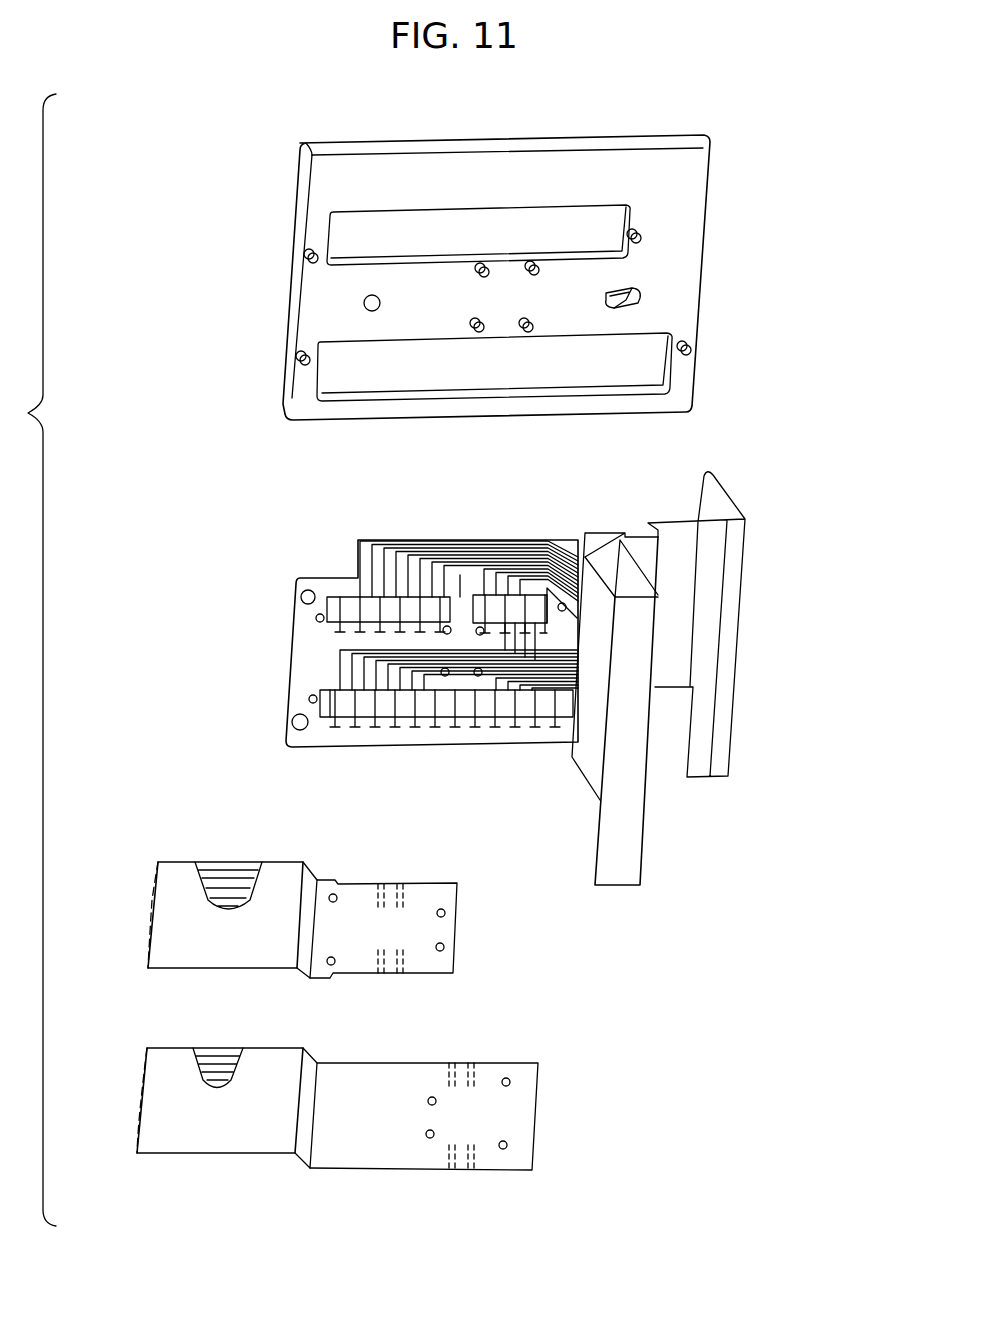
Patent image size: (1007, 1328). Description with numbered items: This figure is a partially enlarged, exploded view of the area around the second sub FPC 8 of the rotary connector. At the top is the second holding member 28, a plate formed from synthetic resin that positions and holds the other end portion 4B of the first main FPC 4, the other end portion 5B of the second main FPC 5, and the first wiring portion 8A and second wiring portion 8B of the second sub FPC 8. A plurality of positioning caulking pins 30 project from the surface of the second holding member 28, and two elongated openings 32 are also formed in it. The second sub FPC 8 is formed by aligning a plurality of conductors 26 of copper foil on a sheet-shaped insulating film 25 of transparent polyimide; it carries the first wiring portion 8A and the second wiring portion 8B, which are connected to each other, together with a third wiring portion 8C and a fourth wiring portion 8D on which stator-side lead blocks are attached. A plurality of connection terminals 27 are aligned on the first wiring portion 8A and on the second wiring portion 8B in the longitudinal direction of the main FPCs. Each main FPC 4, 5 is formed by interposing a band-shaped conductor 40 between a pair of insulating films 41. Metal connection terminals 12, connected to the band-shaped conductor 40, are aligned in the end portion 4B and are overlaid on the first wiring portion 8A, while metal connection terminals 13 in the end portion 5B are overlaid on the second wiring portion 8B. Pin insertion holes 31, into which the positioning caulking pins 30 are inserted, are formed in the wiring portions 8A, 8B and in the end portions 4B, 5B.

The second holding member 28 is at (700, 170).
The positioning caulking pin 30 is at (537, 262).
The slot 32 is at (479, 212).
The second sub flexible printed circuit board 8 is at (338, 558).
The insulating film 25 is at (310, 640).
The conductors 26 is at (335, 675).
The connection terminals 27 is at (385, 605).
The pin insertion hole 31 is at (447, 625).
The first wiring portion 8A is at (536, 729).
The second wiring portion 8B is at (367, 731).
The third wiring portion 8C is at (637, 835).
The fourth wiring portion 8D is at (740, 545).
The second main FPC 5 is at (170, 935).
The other end portion of the second main FPC 5B is at (452, 928).
The first main FPC 4 is at (150, 1098).
The other end portion of the first main FPC 4B is at (515, 1120).
The band-shaped conductor 40 is at (240, 870).
The insulating films 41 is at (165, 885).
The connection terminals 13 is at (378, 884).
The connection terminals 12 is at (460, 1062).